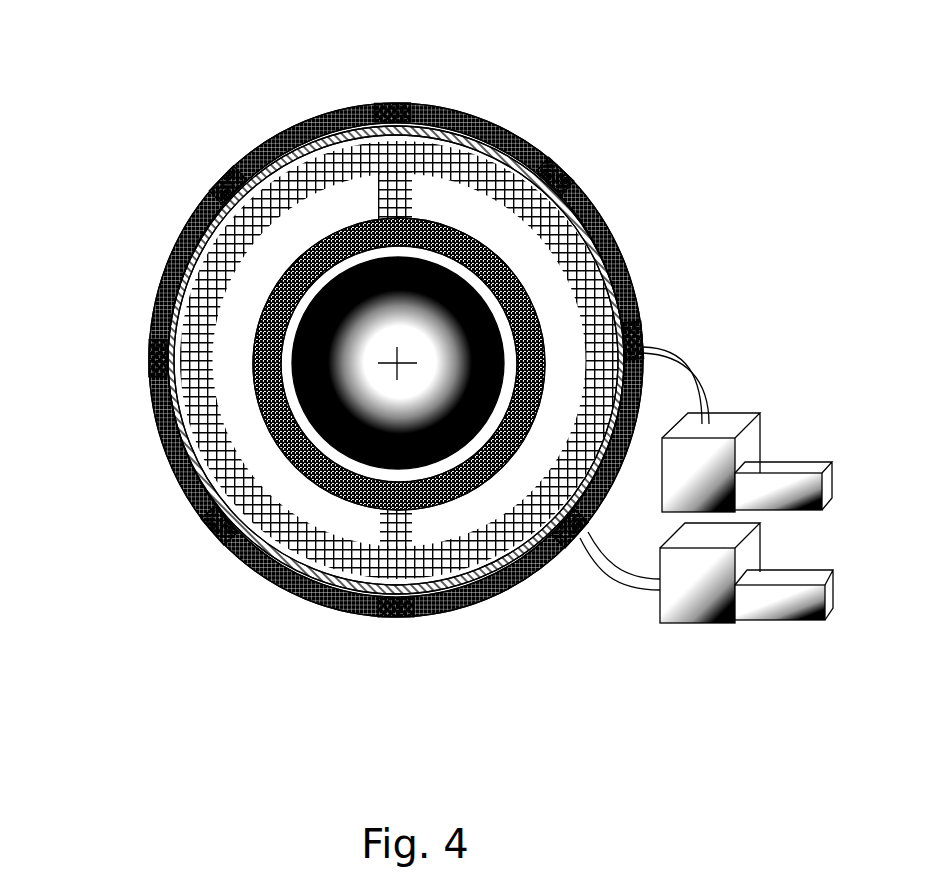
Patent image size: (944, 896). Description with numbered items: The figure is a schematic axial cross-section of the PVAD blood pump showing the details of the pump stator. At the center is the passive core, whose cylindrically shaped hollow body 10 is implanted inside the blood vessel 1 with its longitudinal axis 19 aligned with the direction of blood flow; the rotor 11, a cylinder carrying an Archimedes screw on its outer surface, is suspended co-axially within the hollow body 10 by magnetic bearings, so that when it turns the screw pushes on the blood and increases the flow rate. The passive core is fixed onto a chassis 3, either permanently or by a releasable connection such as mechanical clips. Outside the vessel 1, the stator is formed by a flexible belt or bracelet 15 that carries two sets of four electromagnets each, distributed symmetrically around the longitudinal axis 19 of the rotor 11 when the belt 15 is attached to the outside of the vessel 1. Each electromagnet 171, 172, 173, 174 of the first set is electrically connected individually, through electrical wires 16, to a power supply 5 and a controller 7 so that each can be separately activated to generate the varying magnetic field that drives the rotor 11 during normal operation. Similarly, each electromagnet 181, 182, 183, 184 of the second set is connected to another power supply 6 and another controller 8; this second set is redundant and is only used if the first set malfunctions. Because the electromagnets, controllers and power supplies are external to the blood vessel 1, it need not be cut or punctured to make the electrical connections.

The blood vessel 1 is at (193, 463).
The chassis 3 is at (298, 185).
The hollow body 10 is at (452, 222).
The rotor 11 is at (380, 330).
The flexible belt or bracelet 15 is at (590, 213).
The electrical wires 16 is at (673, 343).
The electromagnet 171 is at (150, 344).
The electromagnet 172 is at (397, 101).
The electromagnet 173 is at (645, 327).
The electromagnet 174 is at (397, 620).
The electromagnet 181 is at (215, 535).
The electromagnet 182 is at (222, 172).
The electromagnet 183 is at (565, 175).
The electromagnet 184 is at (570, 547).
The longitudinal axis 19 is at (405, 356).
The power supply 5 is at (742, 410).
The power supply 6 is at (693, 623).
The controller 7 is at (792, 460).
The controller 8 is at (777, 622).